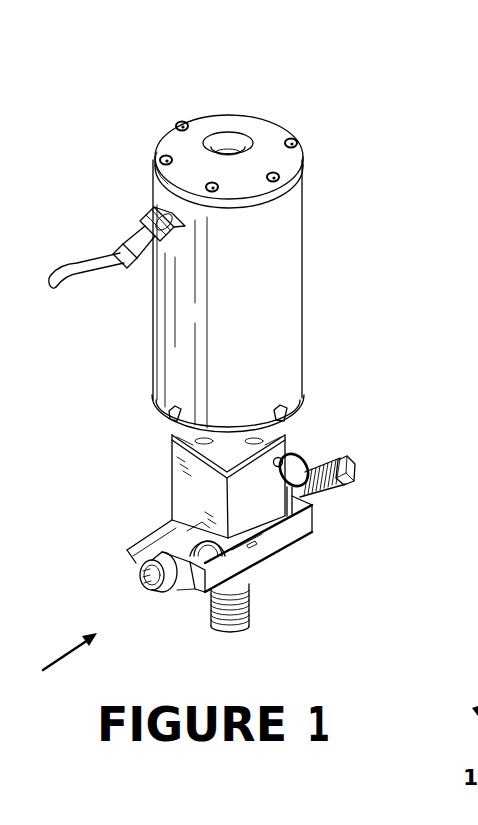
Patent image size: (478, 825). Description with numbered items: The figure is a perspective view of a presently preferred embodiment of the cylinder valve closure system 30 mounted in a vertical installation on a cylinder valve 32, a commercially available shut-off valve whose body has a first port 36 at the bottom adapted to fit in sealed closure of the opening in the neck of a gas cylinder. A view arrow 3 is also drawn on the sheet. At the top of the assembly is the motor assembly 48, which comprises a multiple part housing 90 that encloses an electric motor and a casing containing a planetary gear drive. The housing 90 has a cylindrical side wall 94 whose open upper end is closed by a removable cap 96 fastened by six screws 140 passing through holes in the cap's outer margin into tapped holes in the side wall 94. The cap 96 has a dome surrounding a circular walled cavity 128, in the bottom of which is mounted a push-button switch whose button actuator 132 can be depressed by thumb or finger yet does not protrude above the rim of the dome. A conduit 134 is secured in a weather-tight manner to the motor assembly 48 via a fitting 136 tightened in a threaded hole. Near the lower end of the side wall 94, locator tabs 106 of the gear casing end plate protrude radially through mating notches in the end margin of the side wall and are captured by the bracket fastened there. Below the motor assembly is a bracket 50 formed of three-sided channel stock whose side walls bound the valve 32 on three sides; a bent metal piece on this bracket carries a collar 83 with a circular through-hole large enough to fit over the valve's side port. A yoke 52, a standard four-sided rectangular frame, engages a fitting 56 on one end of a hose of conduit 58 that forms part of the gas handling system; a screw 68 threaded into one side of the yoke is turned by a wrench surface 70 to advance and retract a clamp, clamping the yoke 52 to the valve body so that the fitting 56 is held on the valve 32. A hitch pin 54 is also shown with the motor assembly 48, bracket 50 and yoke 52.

The view direction of FIG. 3 is at (66, 655).
The cylinder valve closure system 30 is at (336, 318).
The cylinder valve 32 is at (272, 577).
The first port 36 is at (253, 620).
The motor assembly 48 is at (307, 153).
The bracket 50 is at (164, 467).
The yoke 52 is at (316, 535).
The hitch pin 54 is at (300, 460).
The fitting 56 is at (183, 593).
The hose of conduit 58 is at (140, 592).
The screw 68 is at (337, 492).
The wrench surface 70 is at (356, 476).
The collar 83 is at (177, 523).
The housing 90 is at (309, 215).
The cylindrical side wall 94 is at (283, 246).
The removable cap 96 is at (155, 150).
The locator tabs 106 is at (165, 416).
The circular walled cavity 128 is at (222, 137).
The button actuator 132 is at (238, 153).
The conduit 134 is at (74, 260).
The fitting 136 is at (160, 257).
The screws 140 is at (278, 176).